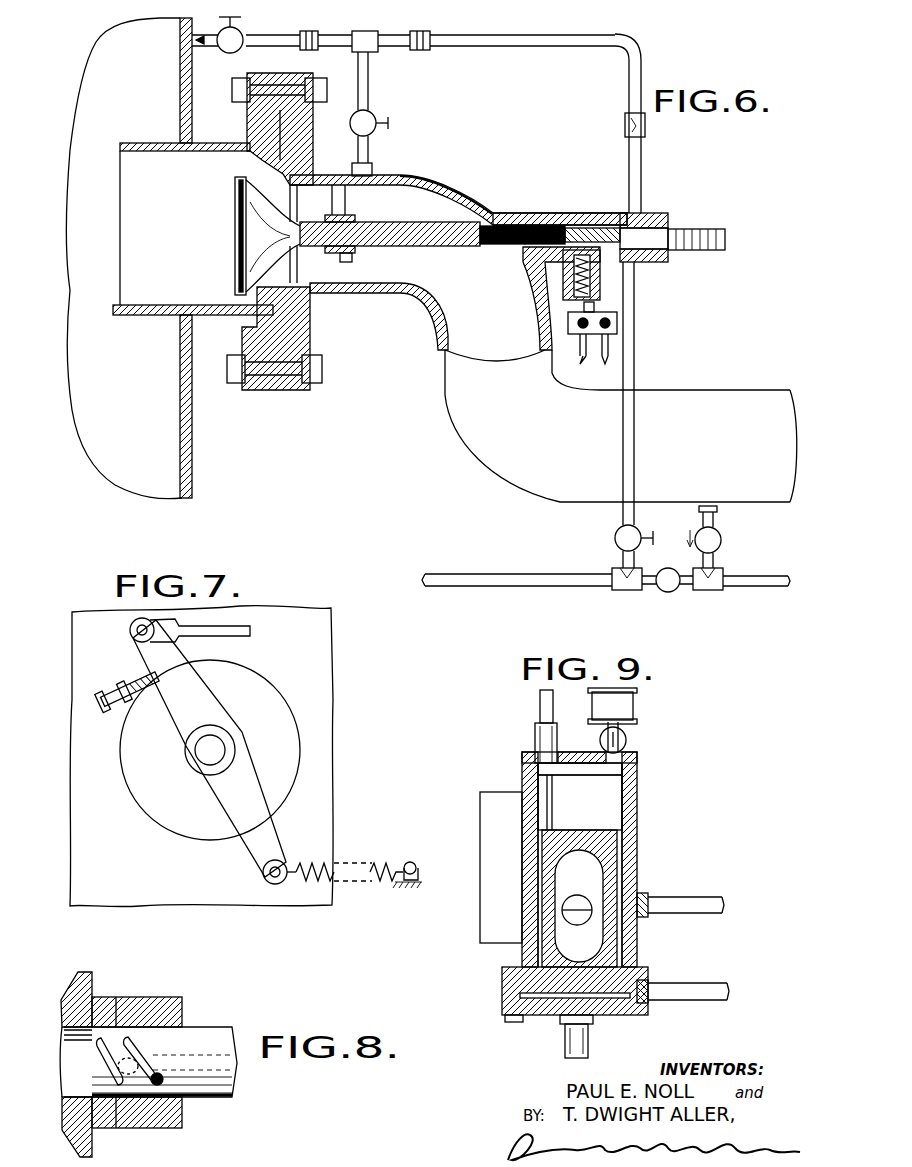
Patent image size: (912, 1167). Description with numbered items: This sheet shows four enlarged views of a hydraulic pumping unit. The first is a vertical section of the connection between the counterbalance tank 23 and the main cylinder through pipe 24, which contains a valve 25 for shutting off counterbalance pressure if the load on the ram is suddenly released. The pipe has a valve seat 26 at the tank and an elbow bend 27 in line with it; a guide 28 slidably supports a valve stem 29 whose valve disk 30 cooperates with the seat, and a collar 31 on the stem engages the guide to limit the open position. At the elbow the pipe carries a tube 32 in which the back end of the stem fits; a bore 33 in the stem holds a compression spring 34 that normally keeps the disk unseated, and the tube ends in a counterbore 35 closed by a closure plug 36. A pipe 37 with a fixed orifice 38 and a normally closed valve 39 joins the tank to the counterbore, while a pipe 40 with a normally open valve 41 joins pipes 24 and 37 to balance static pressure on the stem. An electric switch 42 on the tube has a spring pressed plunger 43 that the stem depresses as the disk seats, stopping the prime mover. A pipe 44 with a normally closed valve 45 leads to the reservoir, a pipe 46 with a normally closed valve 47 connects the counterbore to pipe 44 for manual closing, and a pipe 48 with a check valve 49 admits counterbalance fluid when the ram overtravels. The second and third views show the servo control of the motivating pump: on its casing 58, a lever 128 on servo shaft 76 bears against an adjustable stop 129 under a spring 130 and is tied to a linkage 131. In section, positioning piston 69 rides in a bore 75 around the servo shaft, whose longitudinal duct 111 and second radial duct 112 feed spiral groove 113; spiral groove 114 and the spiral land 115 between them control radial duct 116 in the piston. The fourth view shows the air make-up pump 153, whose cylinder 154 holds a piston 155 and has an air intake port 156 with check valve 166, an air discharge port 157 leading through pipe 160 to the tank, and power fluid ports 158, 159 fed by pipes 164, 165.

In FIG. 6, the tank 23 is at (180, 70).
In FIG. 6, the pipe 24 is at (395, 176).
In FIG. 6, the valve 25 is at (226, 218).
In FIG. 6, the valve seat 26 is at (285, 181).
In FIG. 6, the elbow bend 27 is at (456, 180).
In FIG. 6, the guide 28 is at (323, 256).
In FIG. 6, the valve stem 29 is at (380, 224).
In FIG. 6, the valve disk 30 is at (238, 262).
In FIG. 6, the collar 31 is at (357, 255).
In FIG. 6, the tube 32 is at (555, 209).
In FIG. 6, the bore 33 is at (500, 250).
In FIG. 6, the compression spring 34 is at (462, 250).
In FIG. 6, the counterbore 35 is at (645, 222).
In FIG. 6, the closure plug 36 is at (668, 232).
In FIG. 6, the pipe 37 is at (548, 48).
In FIG. 6, the fixed orifice 38 is at (623, 124).
In FIG. 6, the valve 39 is at (228, 54).
In FIG. 6, the pipe 40 is at (369, 73).
In FIG. 6, the valve 41 is at (375, 118).
In FIG. 6, the electric switch 42 is at (617, 318).
In FIG. 6, the spring pressed plunger 43 is at (572, 298).
In FIG. 6, the pipe 44 is at (515, 572).
In FIG. 6, the valve 45 is at (672, 592).
In FIG. 6, the pipe 46 is at (636, 373).
In FIG. 6, the valve 47 is at (615, 542).
In FIG. 6, the pipe 48 is at (716, 518).
In FIG. 6, the check valve 49 is at (722, 544).
In FIG. 7, the casing 58 is at (341, 759).
In FIG. 7, the servo shaft 76 is at (227, 751).
In FIG. 8, the servo shaft 76 is at (203, 1038).
In FIG. 7, the lever 128 is at (218, 800).
In FIG. 7, the adjustable stop 129 is at (106, 684).
In FIG. 7, the spring 130 is at (335, 860).
In FIG. 7, the linkage 131 is at (240, 637).
In FIG. 8, the positioning piston 69 is at (64, 996).
In FIG. 8, the bore 75 is at (112, 1010).
In FIG. 8, the longitudinal duct 111 is at (237, 1068).
In FIG. 8, the second radial duct 112 is at (158, 1060).
In FIG. 8, the spiral groove 113 is at (153, 1074).
In FIG. 8, the spiral groove 114 is at (100, 1062).
In FIG. 8, the spiral land 115 is at (92, 1036).
In FIG. 8, the radial duct 116 is at (137, 1080).
In FIG. 9, the air make-up pump 153 is at (648, 823).
In FIG. 9, the cylinder 154 is at (637, 868).
In FIG. 9, the piston 155 is at (562, 838).
In FIG. 9, the air intake port 156 is at (618, 762).
In FIG. 9, the air discharge port 157 is at (538, 762).
In FIG. 9, the power fluid port 158 is at (620, 1015).
In FIG. 9, the power fluid port 159 is at (640, 912).
In FIG. 9, the pipe 160 is at (538, 708).
In FIG. 9, the pipe 164 is at (685, 998).
In FIG. 9, the pipe 165 is at (704, 908).
In FIG. 9, the check valve 166 is at (627, 738).